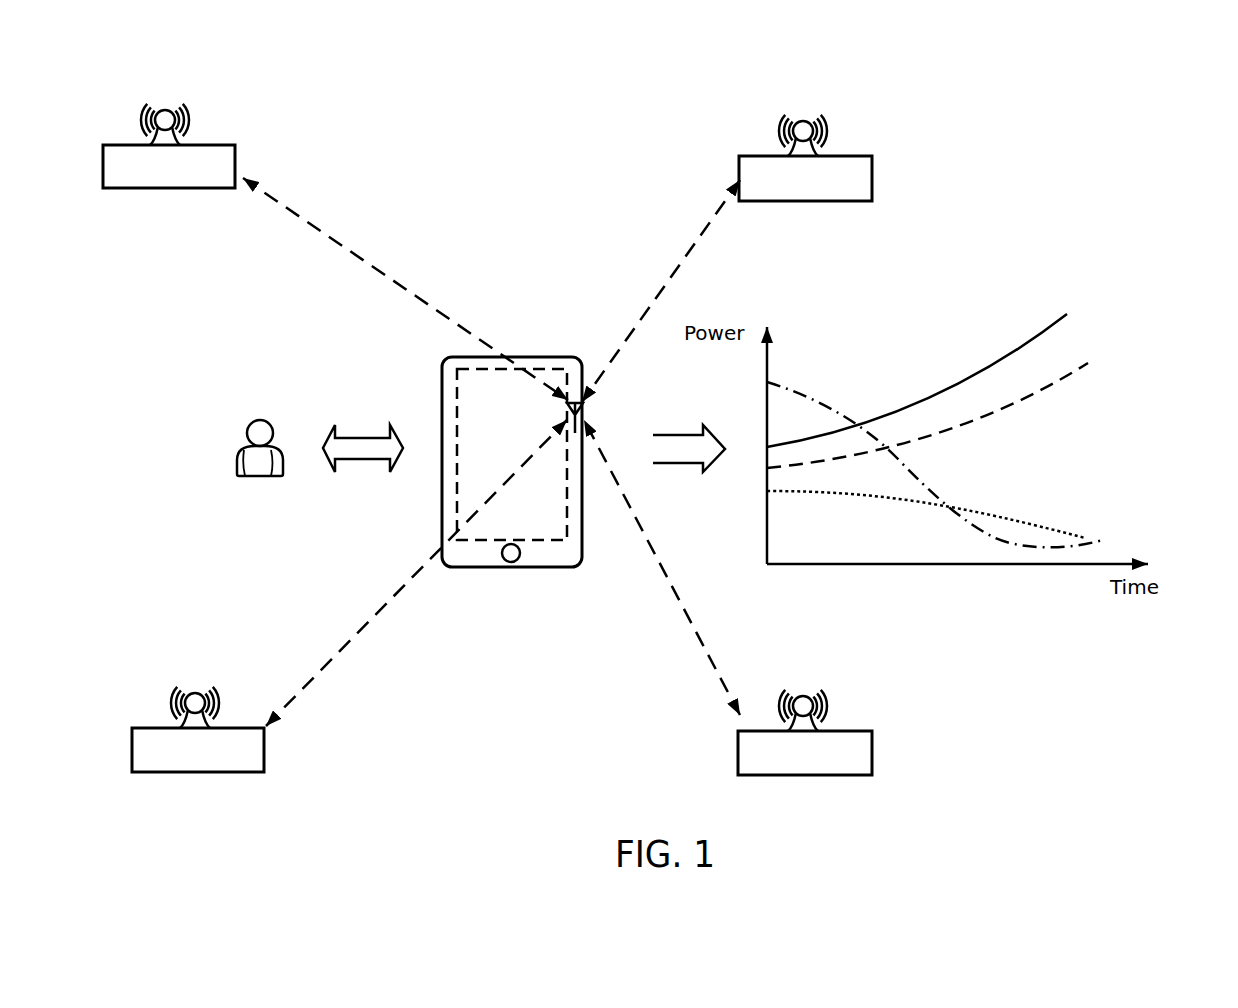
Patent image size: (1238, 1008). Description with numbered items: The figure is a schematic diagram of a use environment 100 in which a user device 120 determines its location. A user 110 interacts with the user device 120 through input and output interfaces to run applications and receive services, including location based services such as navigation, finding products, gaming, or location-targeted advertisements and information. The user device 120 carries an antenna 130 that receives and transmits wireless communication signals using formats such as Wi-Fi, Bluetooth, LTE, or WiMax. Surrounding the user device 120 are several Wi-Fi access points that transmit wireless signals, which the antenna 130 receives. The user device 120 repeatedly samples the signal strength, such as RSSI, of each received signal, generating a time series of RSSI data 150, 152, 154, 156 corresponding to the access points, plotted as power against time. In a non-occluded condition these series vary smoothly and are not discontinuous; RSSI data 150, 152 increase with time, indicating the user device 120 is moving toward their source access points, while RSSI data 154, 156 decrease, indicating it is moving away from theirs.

The use environment 100 is at (1144, 99).
The user 110 is at (252, 420).
The user device 120 is at (481, 569).
The antenna 130 is at (583, 405).
The time series of RSSI data 150 is at (808, 396).
The time series of RSSI data 152 is at (1027, 343).
The time series of RSSI data 154 is at (1040, 388).
The time series of RSSI data 156 is at (1020, 518).